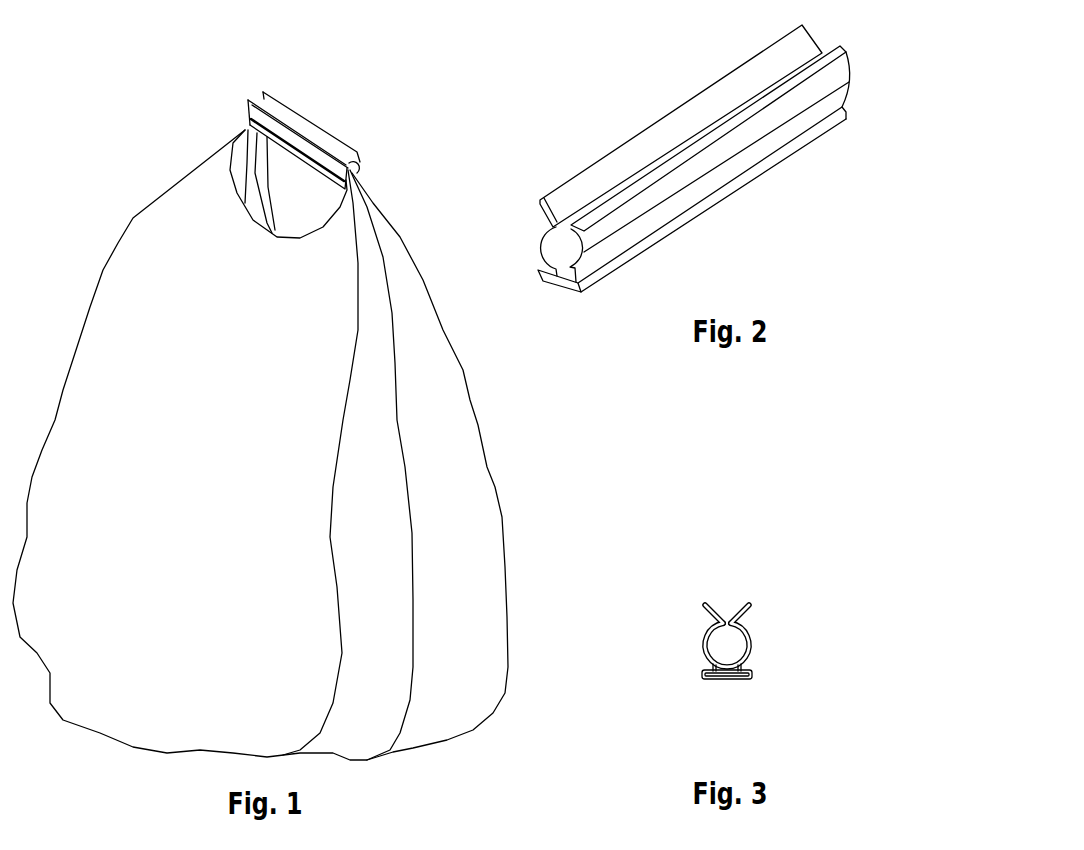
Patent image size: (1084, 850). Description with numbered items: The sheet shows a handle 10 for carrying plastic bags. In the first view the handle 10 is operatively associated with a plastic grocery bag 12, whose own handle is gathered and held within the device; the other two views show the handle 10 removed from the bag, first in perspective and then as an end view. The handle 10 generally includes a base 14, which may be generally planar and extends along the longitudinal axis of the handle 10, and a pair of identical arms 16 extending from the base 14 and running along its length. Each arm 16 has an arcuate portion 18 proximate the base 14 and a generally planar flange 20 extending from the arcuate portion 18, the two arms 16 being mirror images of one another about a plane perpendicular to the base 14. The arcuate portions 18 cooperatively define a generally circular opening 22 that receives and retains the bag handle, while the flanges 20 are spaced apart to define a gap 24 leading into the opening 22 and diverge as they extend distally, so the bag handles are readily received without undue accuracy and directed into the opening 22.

In FIG. 1, the handle 10 is at (312, 118).
In FIG. 2, the handle 10 is at (660, 174).
In FIG. 3, the handle 10 is at (715, 620).
In FIG. 1, the plastic grocery bag 12 is at (133, 217).
In FIG. 2, the base 14 is at (560, 282).
In FIG. 3, the base 14 is at (723, 675).
In FIG. 2, the arms 16 is at (537, 240).
In FIG. 3, the arms 16 is at (727, 612).
In FIG. 2, the arcuate portion 18 is at (653, 210).
In FIG. 3, the arcuate portion 18 is at (749, 630).
In FIG. 2, the flange 20 is at (581, 228).
In FIG. 3, the flange 20 is at (705, 602).
In FIG. 2, the opening 22 is at (557, 248).
In FIG. 3, the opening 22 is at (727, 648).
In FIG. 3, the gap 24 is at (725, 618).